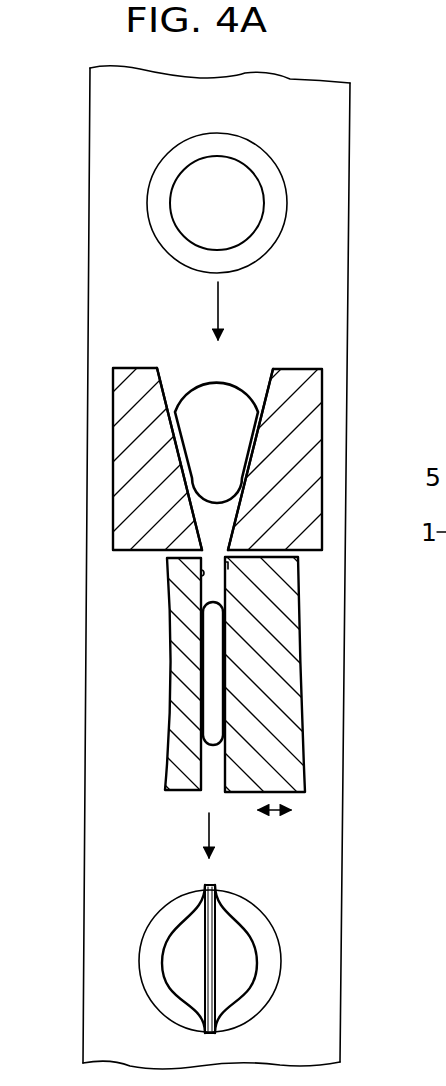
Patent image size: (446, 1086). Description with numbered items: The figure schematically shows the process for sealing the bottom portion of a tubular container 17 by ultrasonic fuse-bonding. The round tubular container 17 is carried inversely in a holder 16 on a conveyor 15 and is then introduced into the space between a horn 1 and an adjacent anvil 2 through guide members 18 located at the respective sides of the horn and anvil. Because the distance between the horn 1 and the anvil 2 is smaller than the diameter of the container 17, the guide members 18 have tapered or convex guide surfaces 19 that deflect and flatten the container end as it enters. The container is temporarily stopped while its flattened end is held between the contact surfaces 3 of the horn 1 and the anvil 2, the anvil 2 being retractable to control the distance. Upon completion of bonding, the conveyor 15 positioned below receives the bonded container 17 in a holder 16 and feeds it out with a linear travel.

The conveyor 15 is at (350, 257).
The holder 16 is at (283, 180).
The tubular container 17 is at (264, 208).
The guide member 18 is at (123, 473).
The guide surface 19 is at (168, 388).
The horn 1 is at (175, 678).
The anvil 2 is at (290, 700).
The contact surface 3 is at (225, 595).